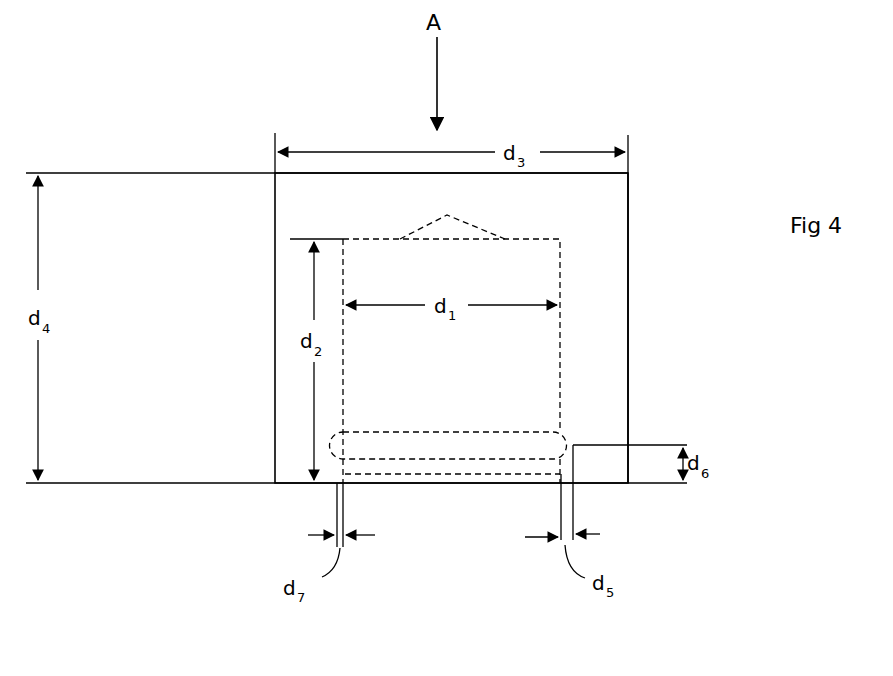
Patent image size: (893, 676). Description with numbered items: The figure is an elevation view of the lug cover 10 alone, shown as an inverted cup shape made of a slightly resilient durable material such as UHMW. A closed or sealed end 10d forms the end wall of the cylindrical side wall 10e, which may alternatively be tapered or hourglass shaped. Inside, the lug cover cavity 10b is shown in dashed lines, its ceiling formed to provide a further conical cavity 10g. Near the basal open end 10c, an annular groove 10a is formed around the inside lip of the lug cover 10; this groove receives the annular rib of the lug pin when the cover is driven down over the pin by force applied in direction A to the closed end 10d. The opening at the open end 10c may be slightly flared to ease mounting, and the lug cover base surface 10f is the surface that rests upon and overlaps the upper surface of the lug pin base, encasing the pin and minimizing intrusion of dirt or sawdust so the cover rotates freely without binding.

The lug cover 10 is at (692, 173).
The annular groove 10a is at (566, 444).
The lug cover cavity 10b is at (507, 363).
The basal open end 10c is at (472, 487).
The closed end 10d is at (520, 172).
The cylindrical side wall 10e is at (628, 252).
The lug cover base surface 10f is at (603, 487).
The conical cavity 10g is at (477, 228).